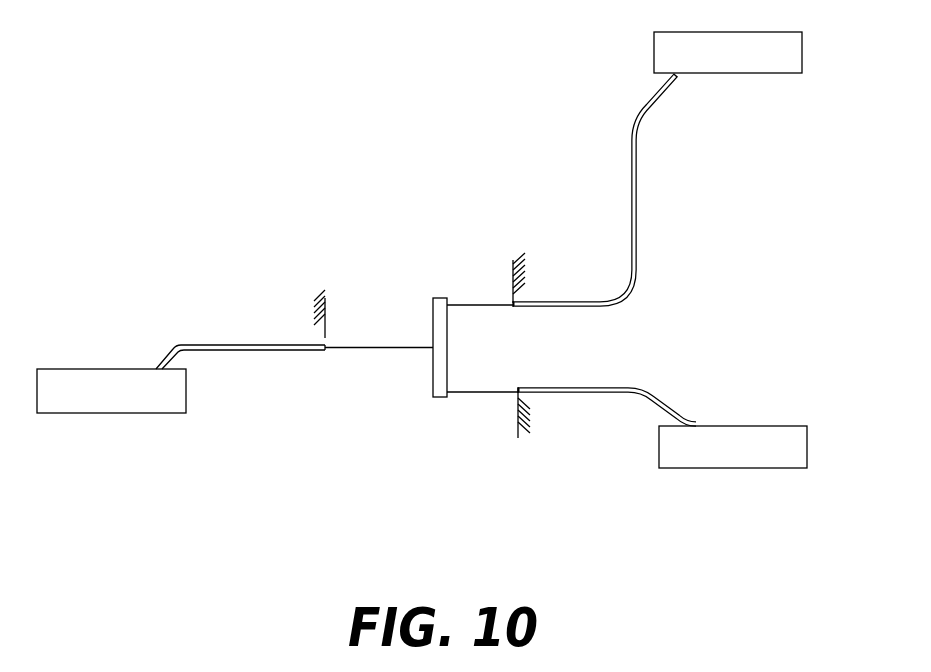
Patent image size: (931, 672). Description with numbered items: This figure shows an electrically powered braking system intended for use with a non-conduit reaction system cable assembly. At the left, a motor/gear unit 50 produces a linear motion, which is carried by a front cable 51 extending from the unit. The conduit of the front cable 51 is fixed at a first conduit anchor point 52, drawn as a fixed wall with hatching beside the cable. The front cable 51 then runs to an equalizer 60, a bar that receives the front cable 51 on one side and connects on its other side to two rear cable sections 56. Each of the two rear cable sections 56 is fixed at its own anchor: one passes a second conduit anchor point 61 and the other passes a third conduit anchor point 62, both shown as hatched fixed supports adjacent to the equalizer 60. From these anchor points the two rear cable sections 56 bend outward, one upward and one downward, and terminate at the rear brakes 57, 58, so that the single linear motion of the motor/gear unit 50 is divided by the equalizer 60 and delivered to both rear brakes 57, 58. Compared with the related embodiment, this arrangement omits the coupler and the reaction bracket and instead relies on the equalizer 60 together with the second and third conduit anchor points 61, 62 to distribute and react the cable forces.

The motor/gear unit for producing a linear motion 50 is at (110, 428).
The front cable 51 is at (203, 324).
The first conduit anchor point 52 is at (323, 373).
The rear cable sections 56 is at (653, 201).
The rear brake 57 is at (770, 80).
The rear brake 58 is at (770, 406).
The equalizer 60 is at (421, 309).
The second conduit anchor point 61 is at (506, 285).
The third conduit anchor point 62 is at (517, 445).